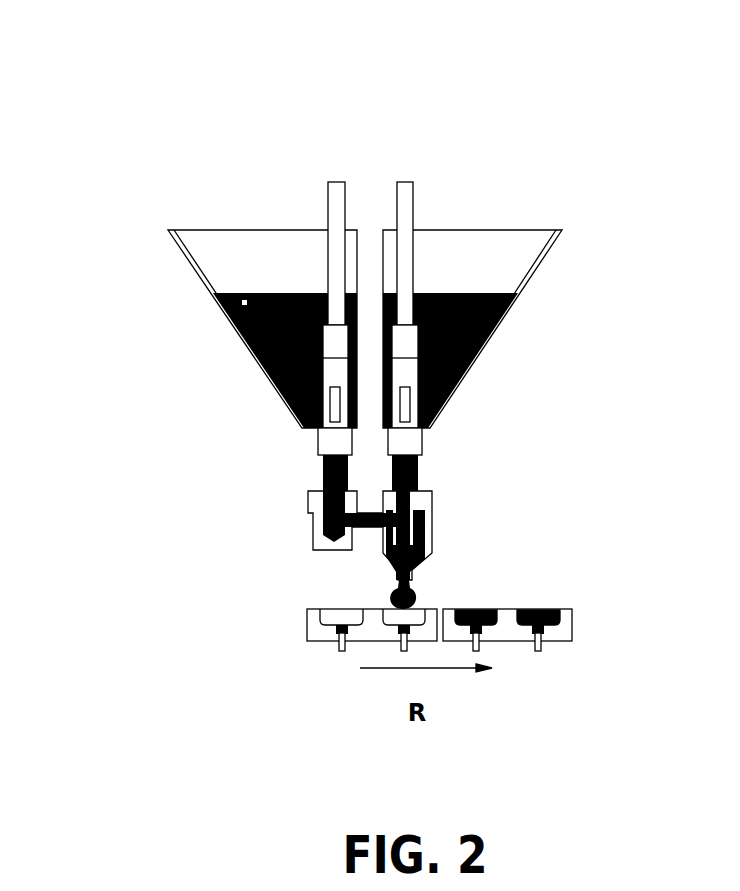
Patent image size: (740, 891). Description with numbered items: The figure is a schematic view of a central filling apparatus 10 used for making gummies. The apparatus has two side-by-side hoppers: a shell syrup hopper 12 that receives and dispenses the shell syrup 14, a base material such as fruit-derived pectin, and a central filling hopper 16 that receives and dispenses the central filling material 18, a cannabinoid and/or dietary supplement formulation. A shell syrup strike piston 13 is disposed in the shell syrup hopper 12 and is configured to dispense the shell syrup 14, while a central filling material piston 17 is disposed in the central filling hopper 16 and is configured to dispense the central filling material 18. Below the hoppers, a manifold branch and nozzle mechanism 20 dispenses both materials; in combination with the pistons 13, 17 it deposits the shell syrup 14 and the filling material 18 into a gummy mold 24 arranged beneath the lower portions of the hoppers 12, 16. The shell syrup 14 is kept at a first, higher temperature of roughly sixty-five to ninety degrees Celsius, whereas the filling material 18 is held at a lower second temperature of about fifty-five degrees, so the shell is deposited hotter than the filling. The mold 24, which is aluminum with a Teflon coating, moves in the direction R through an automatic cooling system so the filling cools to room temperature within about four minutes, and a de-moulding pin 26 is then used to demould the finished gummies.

The central filling apparatus 10 is at (208, 118).
The shell syrup hopper 12 is at (168, 230).
The shell syrup strike piston 13 is at (328, 210).
The shell syrup 14 is at (250, 345).
The central filling hopper 16 is at (562, 230).
The central filling material piston 17 is at (413, 207).
The central filling material 18 is at (488, 345).
The manifold branch and nozzle mechanism 20 is at (430, 533).
The gummy mold 24 is at (307, 625).
The de-moulding pin 26 is at (340, 648).